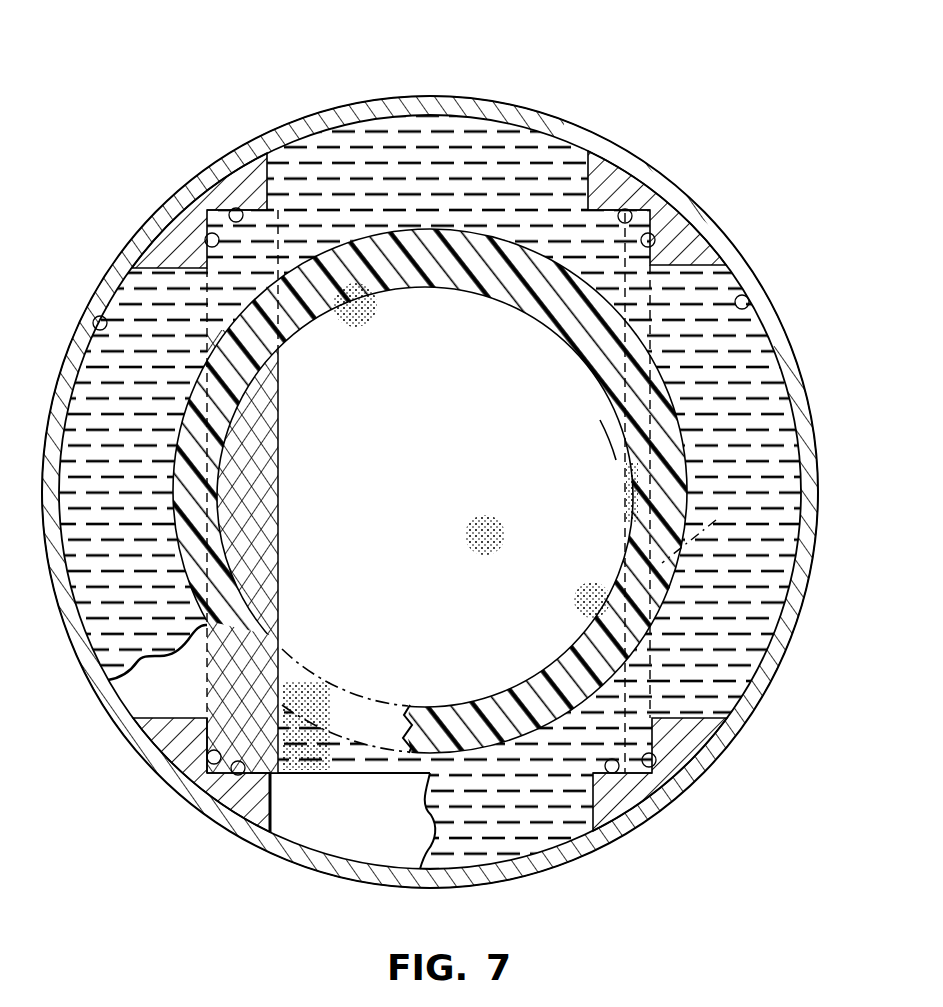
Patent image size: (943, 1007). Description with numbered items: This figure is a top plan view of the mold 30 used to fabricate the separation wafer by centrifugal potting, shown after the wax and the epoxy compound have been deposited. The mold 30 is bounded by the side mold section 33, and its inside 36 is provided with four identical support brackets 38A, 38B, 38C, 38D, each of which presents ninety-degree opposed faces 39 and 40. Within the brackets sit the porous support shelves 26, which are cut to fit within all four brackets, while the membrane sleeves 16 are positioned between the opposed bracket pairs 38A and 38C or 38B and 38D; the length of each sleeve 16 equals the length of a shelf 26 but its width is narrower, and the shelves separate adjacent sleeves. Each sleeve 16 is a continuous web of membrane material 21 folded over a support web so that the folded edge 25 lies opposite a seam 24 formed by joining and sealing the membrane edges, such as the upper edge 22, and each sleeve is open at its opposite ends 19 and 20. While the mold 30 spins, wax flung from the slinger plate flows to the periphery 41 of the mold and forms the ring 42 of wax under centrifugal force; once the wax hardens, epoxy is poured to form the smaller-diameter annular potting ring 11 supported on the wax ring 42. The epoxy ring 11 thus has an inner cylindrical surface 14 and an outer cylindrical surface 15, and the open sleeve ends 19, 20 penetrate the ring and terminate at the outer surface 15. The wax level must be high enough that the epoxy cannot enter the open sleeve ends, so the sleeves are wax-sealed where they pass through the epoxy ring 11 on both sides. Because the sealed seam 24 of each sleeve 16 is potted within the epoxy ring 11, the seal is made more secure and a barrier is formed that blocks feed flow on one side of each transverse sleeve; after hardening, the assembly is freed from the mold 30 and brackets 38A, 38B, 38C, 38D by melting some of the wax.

The mold 30 is at (290, 97).
The ring of wax 42 is at (436, 135).
The end of sleeve 20 is at (548, 210).
The support bracket 38A is at (193, 222).
The support bracket 38B is at (615, 175).
The support bracket 38C is at (158, 737).
The support bracket 38D is at (717, 753).
The opposed face 40 is at (222, 217).
The opposed face 39 is at (210, 245).
The periphery of the mold 41 is at (742, 302).
The inside of mold 36 is at (100, 325).
The potting ring 11 is at (675, 385).
The membrane material 21 is at (610, 447).
The upper edge of membrane 22 is at (634, 468).
The seam 24 is at (632, 525).
The inner cylindrical surface 14 is at (244, 588).
The outer cylindrical surface 15 is at (185, 576).
The sleeve 16 is at (285, 664).
The support shelf 26 is at (228, 727).
The folded edge 25 is at (262, 773).
The end of sleeve 19 is at (376, 776).
The side mold section 33 is at (762, 697).